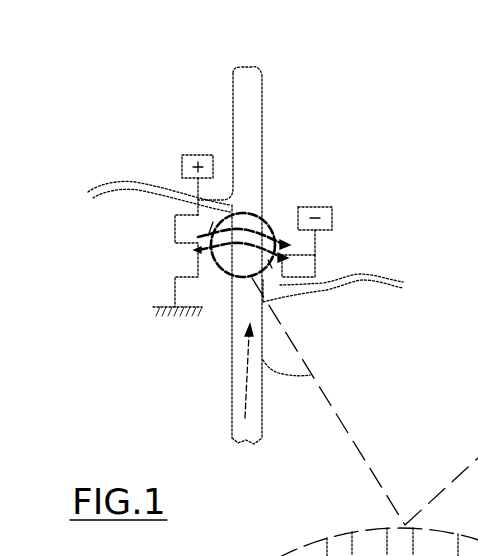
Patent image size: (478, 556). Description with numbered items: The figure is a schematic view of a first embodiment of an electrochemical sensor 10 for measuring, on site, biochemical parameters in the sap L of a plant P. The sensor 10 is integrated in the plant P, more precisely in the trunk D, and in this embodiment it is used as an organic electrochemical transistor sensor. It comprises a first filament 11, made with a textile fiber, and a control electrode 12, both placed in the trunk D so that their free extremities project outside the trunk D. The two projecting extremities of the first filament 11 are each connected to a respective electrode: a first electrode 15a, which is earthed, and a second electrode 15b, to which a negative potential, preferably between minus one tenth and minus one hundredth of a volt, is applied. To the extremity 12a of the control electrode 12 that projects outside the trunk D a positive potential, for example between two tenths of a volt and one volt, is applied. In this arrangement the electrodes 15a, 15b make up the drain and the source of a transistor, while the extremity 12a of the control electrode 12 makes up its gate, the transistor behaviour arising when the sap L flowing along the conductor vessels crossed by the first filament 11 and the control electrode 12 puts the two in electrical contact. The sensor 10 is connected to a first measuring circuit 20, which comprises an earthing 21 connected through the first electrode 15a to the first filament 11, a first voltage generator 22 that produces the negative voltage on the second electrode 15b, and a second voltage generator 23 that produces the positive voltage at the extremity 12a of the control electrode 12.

The electrochemical sensor 10 is at (186, 250).
The first filament 11 is at (300, 283).
The control electrode 12 is at (271, 228).
The extremity of the control electrode 12a is at (195, 237).
The first electrode 15a is at (190, 257).
The second electrode 15b is at (327, 256).
The first measuring circuit 20 is at (191, 149).
The earthing 21 is at (180, 318).
The first voltage generator 22 is at (332, 212).
The second voltage generator 23 is at (182, 172).
The plant P is at (250, 101).
The sap L is at (250, 388).
The trunk D is at (310, 375).